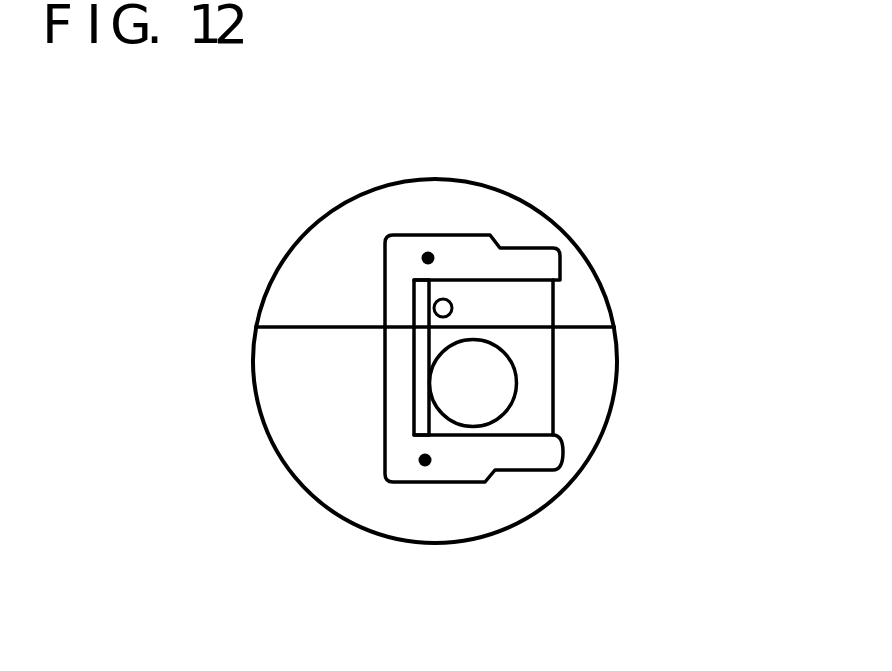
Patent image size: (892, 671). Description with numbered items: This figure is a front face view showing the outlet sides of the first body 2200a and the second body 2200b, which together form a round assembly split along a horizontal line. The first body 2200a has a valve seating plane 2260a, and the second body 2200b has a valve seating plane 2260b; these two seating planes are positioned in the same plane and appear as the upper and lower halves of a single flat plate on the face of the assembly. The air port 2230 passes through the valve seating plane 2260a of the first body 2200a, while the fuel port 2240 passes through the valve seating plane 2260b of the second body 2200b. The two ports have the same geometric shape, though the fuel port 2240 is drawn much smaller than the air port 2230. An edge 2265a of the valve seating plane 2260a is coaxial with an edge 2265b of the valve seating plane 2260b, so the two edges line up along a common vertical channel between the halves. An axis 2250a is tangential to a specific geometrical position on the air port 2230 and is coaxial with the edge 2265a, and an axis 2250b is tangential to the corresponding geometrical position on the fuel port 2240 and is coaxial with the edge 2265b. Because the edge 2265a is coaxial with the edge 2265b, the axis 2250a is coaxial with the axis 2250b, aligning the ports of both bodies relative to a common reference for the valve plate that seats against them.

The first body 2200a is at (475, 543).
The second body 2200b is at (460, 180).
The air port 2230 is at (503, 408).
The fuel port 2240 is at (454, 304).
The axis 2250a is at (428, 360).
The axis 2250b is at (416, 313).
The valve seating plane 2260a is at (538, 407).
The valve seating plane 2260b is at (541, 303).
The edge 2265a is at (428, 420).
The edge 2265b is at (415, 286).